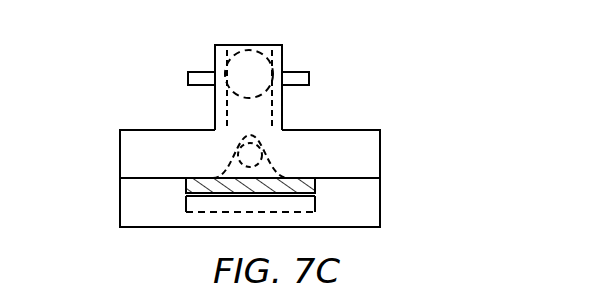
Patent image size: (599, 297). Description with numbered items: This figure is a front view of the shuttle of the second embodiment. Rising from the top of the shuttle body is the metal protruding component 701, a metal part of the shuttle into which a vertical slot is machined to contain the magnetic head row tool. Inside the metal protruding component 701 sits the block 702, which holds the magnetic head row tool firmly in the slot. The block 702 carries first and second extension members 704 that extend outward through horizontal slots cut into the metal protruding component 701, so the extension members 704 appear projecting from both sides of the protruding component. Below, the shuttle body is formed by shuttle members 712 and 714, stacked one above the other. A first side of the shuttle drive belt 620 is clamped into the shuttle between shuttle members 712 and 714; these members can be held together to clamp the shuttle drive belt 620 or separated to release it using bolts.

The shuttle drive belt 620 is at (315, 182).
The metal protruding component 701 is at (283, 95).
The block 702 is at (237, 88).
The first and second extension members 704 is at (205, 71).
The shuttle member 712 is at (133, 145).
The shuttle member 714 is at (128, 208).